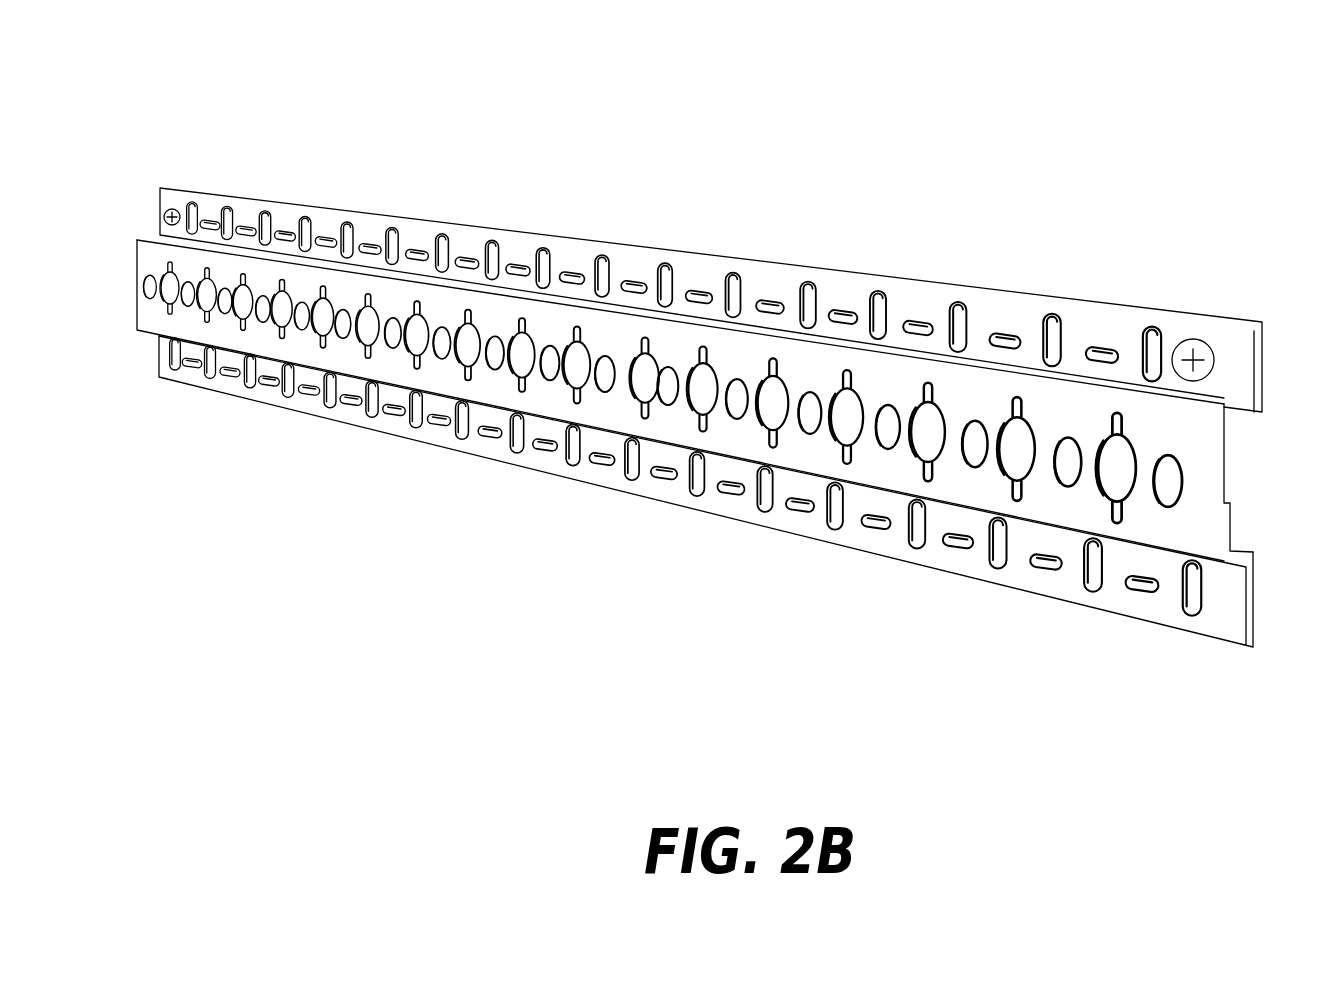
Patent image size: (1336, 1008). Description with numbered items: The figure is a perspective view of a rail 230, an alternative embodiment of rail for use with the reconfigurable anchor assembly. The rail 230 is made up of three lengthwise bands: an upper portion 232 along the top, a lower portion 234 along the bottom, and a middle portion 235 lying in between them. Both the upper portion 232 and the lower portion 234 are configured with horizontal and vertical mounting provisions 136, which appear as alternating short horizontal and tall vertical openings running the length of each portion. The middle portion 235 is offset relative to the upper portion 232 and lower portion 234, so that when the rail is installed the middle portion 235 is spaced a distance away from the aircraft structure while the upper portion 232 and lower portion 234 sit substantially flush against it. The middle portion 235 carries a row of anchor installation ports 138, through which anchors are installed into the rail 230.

The rail 230 is at (252, 148).
The upper portion 232 is at (685, 272).
The lower portion 234 is at (592, 467).
The middle portion 235 is at (387, 363).
The horizontal and vertical mounting provisions 136 is at (808, 287).
The anchor installation ports 138 is at (1121, 476).